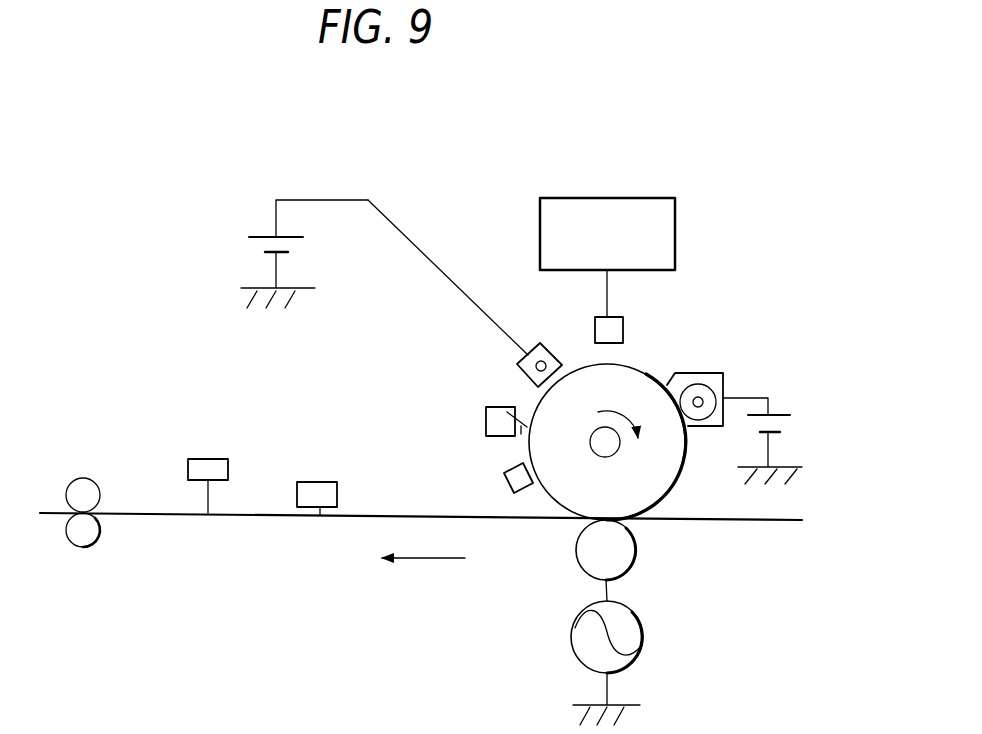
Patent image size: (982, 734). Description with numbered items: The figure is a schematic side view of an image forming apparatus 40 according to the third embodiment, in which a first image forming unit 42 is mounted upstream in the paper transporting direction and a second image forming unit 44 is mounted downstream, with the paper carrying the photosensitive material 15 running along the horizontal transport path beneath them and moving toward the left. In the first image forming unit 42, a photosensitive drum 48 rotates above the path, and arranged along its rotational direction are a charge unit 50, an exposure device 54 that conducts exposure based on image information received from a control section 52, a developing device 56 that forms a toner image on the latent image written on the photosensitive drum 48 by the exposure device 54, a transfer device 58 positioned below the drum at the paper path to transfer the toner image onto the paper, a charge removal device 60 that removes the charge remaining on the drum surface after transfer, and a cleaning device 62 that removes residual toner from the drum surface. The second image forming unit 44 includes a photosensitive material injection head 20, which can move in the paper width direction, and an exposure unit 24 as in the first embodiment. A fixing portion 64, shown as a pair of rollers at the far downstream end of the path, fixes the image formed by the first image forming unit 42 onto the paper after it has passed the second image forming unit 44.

The photosensitive material 15 is at (322, 516).
The photosensitive material injection head 20 is at (317, 488).
The exposure unit 24 is at (206, 462).
The image forming apparatus 40 is at (285, 180).
The first image forming unit 42 is at (495, 245).
The second image forming unit 44 is at (270, 432).
The photosensitive drum 48 is at (652, 495).
The charge unit 50 is at (517, 364).
The control section 52 is at (675, 232).
The exposure device 54 is at (623, 330).
The developing device 56 is at (713, 372).
The transfer device 58 is at (634, 548).
The charge removal device 60 is at (504, 473).
The cleaning device 62 is at (486, 416).
The fixing portion 64 is at (85, 542).